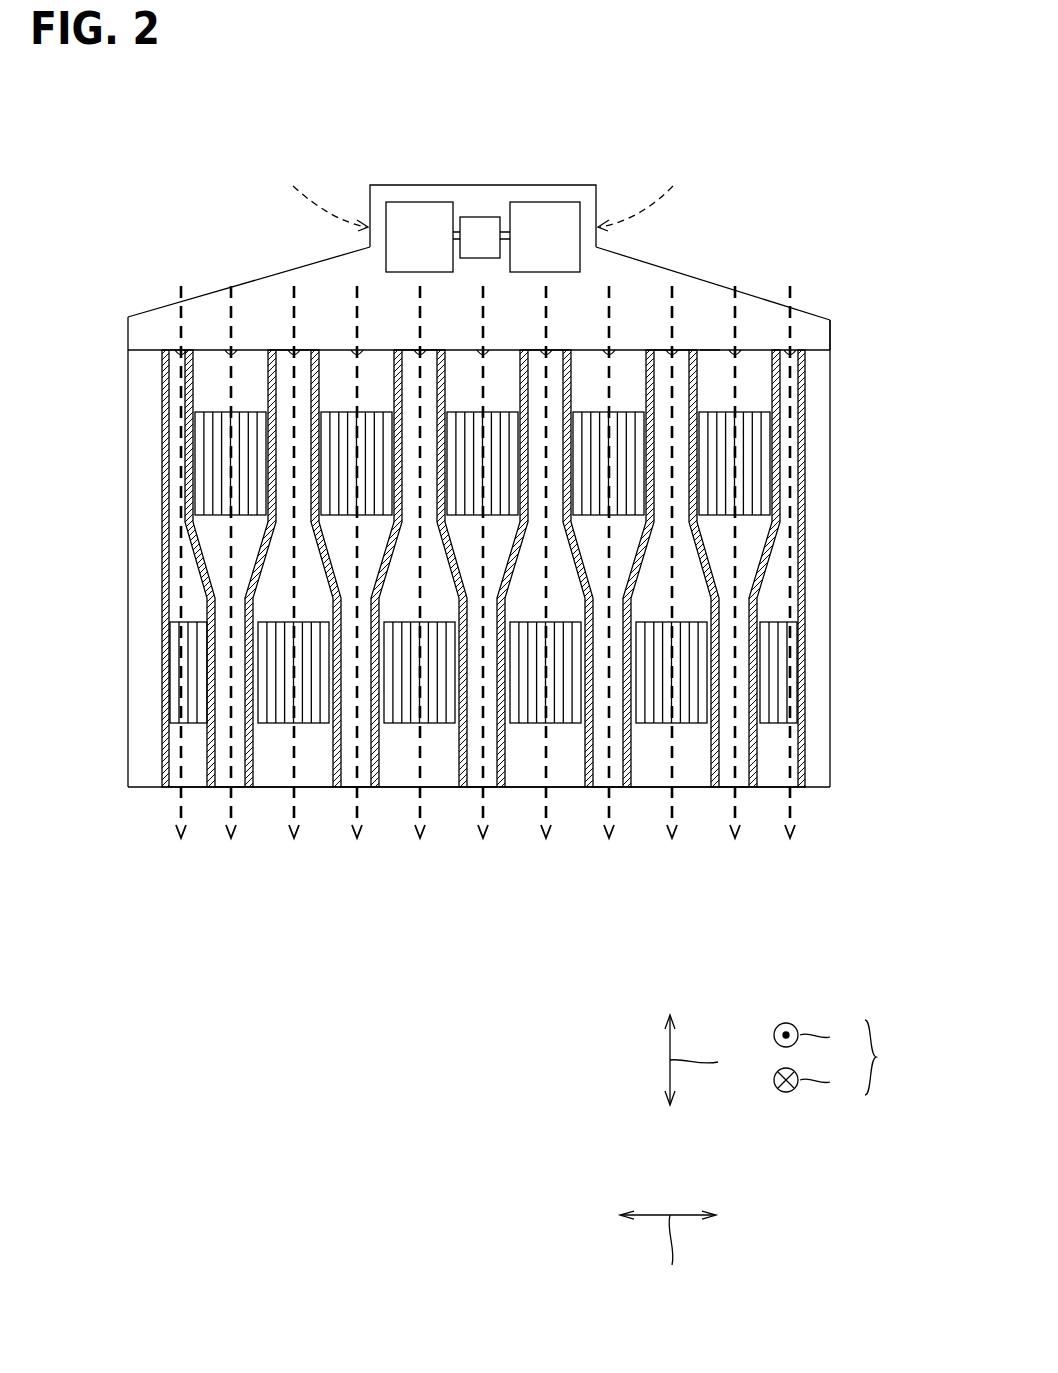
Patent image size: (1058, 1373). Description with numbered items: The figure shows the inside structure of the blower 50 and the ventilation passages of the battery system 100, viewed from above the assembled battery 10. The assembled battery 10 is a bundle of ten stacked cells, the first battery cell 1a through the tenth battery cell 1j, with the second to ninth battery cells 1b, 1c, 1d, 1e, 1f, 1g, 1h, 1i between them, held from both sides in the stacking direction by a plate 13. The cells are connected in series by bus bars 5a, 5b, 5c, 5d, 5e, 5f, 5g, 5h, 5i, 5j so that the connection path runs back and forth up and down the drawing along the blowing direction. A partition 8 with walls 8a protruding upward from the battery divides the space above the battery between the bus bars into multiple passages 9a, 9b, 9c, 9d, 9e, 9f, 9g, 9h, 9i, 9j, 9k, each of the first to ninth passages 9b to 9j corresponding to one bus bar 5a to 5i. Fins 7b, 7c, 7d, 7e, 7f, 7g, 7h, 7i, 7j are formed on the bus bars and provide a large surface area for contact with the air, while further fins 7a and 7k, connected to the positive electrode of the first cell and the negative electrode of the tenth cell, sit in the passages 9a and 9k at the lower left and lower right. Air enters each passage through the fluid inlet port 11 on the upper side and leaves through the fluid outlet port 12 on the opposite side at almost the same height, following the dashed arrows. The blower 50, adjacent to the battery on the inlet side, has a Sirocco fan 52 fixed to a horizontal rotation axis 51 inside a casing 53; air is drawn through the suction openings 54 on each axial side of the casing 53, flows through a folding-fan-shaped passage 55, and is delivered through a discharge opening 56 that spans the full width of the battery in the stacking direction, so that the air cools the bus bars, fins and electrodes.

The battery system 100 is at (740, 118).
The assembled battery 10 is at (842, 490).
The fluid inlet port 11 is at (507, 350).
The fluid outlet port 12 is at (493, 787).
The plate 13 is at (147, 462).
The blower 50 is at (598, 182).
The rotation axis 51 is at (480, 217).
The Sirocco fan 52 is at (425, 210).
The casing 53 is at (707, 283).
The suction opening 54 is at (370, 202).
The passage 55 is at (752, 303).
The discharge opening 56 is at (712, 350).
The partition 8 is at (483, 568).
The wall 8a is at (187, 565).
The first battery cell 1a is at (172, 790).
The second battery cell 1b is at (258, 787).
The third battery cell 1c is at (317, 787).
The fourth battery cell 1d is at (397, 727).
The fifth battery cell 1e is at (438, 787).
The sixth battery cell 1f is at (525, 787).
The seventh battery cell 1g is at (560, 787).
The eighth battery cell 1h is at (653, 787).
The ninth battery cell 1i is at (700, 787).
The tenth battery cell 1j is at (757, 787).
The first bus bar 5a is at (215, 412).
The second bus bar 5b is at (268, 723).
The third bus bar 5c is at (342, 412).
The fourth bus bar 5d is at (393, 787).
The fifth bus bar 5e is at (467, 412).
The sixth bus bar 5f is at (523, 723).
The seventh bus bar 5g is at (637, 412).
The eighth bus bar 5h is at (650, 723).
The ninth bus bar 5i is at (747, 412).
The bus bar 5j is at (778, 683).
The fin 7a is at (190, 683).
The fin 7b is at (203, 412).
The fin 7c is at (310, 723).
The fin 7d is at (283, 357).
The fin 7e is at (435, 723).
The fin 7f is at (475, 412).
The fin 7g is at (565, 723).
The fin 7h is at (627, 412).
The fin 7i is at (690, 723).
The fin 7j is at (753, 412).
The fin 7k is at (780, 723).
The passage 9a is at (180, 603).
The first passage 9b is at (236, 787).
The second passage 9c is at (220, 412).
The third passage 9d is at (365, 787).
The fourth passage 9e is at (405, 787).
The fifth passage 9f is at (466, 787).
The sixth passage 9g is at (576, 787).
The seventh passage 9h is at (635, 787).
The eighth passage 9i is at (668, 787).
The ninth passage 9j is at (725, 787).
The passage 9k is at (768, 787).